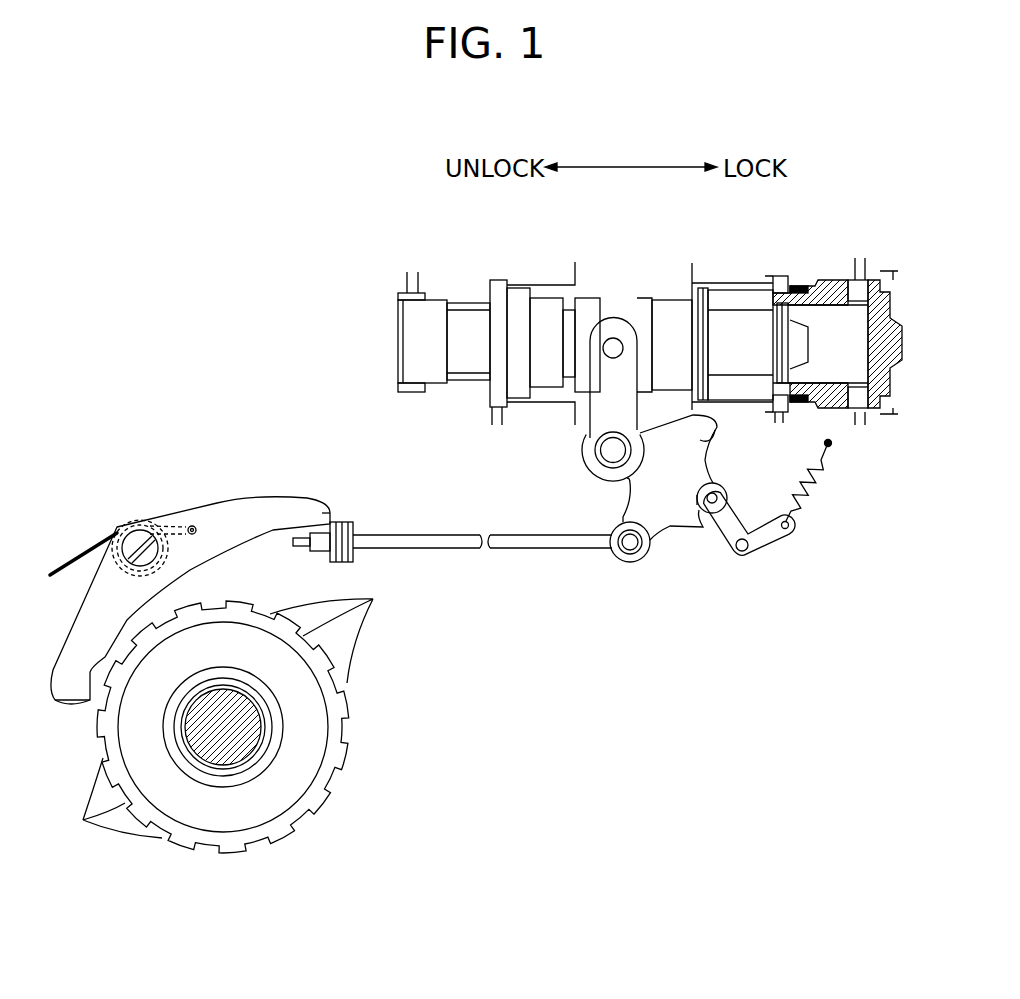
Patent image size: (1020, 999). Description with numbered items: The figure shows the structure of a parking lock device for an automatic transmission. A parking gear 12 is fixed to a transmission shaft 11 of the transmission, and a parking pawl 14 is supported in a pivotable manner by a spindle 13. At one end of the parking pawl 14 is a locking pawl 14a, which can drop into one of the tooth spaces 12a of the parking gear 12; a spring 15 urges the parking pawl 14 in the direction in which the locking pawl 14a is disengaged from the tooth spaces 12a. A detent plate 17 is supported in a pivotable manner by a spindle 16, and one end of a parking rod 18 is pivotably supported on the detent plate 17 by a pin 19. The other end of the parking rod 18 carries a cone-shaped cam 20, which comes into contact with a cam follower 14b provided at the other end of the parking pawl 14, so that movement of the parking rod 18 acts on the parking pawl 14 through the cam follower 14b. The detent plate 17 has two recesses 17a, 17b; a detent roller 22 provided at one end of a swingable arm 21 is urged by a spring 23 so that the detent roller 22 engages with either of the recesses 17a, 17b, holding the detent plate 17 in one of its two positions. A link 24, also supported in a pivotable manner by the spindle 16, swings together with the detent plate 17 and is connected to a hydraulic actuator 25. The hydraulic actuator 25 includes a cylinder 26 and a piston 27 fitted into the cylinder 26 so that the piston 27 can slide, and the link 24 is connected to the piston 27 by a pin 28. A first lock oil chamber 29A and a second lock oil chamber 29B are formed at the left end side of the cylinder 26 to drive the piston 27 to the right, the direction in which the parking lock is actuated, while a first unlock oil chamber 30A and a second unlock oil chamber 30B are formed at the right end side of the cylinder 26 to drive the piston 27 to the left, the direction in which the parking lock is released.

The transmission shaft 11 is at (248, 718).
The parking gear 12 is at (357, 700).
The tooth spaces 12a is at (360, 603).
The spindle 13 is at (140, 540).
The parking pawl 14 is at (228, 486).
The locking pawl 14a is at (90, 700).
The cam follower 14b is at (330, 520).
The spring 15 is at (72, 563).
The spindle 16 is at (612, 450).
The detent plate 17 is at (671, 534).
The recess 17a is at (697, 500).
The recess 17b is at (703, 450).
The parking rod 18 is at (440, 536).
The pin 19 is at (624, 560).
The cone-shaped cam 20 is at (338, 562).
The arm 21 is at (722, 536).
The detent roller 22 is at (728, 489).
The spring 23 is at (822, 472).
The link 24 is at (625, 400).
The hydraulic actuator 25 is at (800, 235).
The cylinder 26 is at (545, 292).
The piston 27 is at (670, 318).
The pin 28 is at (611, 337).
The first lock oil chamber 29A is at (490, 290).
The second lock oil chamber 29B is at (405, 292).
The first unlock oil chamber 30A is at (832, 318).
The second unlock oil chamber 30B is at (750, 290).